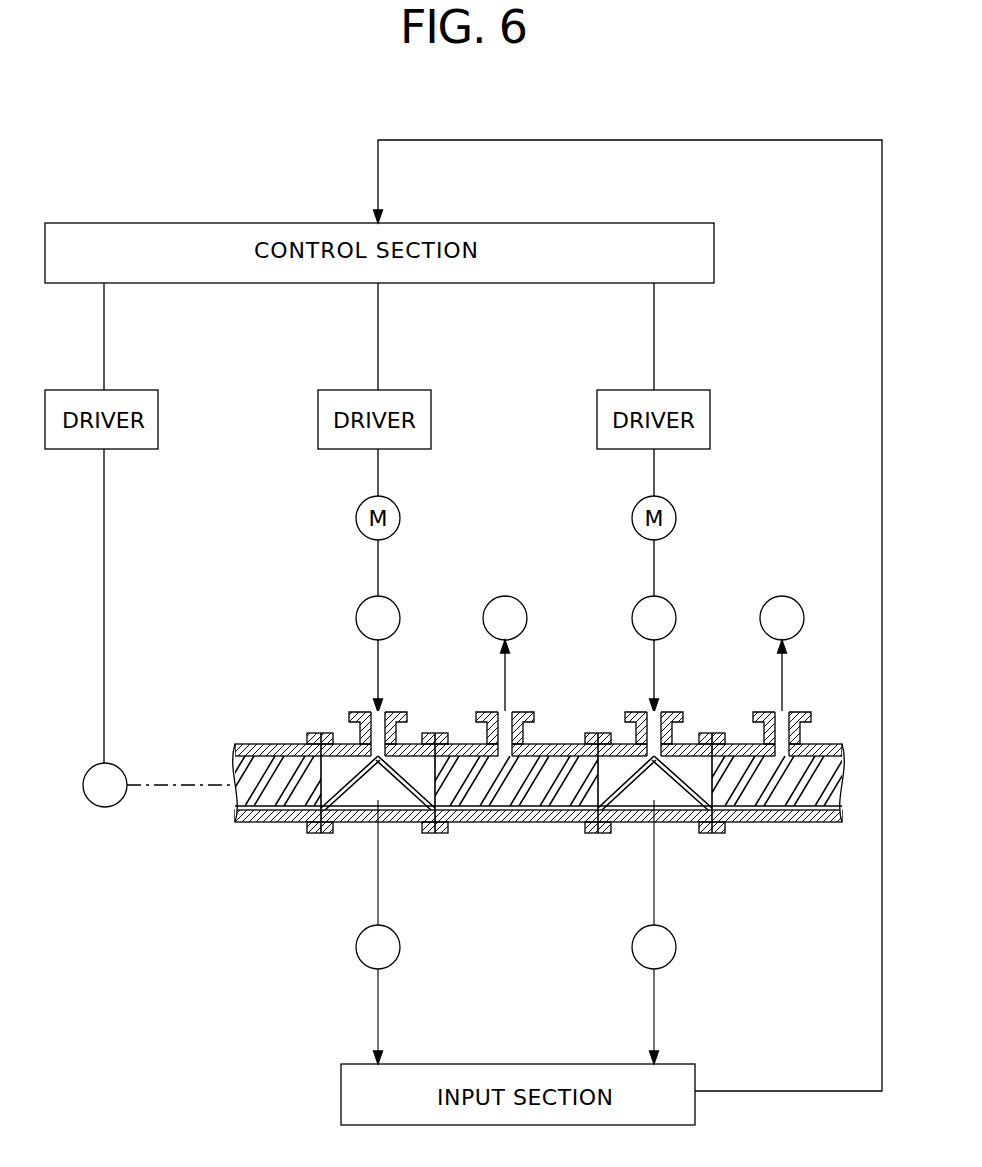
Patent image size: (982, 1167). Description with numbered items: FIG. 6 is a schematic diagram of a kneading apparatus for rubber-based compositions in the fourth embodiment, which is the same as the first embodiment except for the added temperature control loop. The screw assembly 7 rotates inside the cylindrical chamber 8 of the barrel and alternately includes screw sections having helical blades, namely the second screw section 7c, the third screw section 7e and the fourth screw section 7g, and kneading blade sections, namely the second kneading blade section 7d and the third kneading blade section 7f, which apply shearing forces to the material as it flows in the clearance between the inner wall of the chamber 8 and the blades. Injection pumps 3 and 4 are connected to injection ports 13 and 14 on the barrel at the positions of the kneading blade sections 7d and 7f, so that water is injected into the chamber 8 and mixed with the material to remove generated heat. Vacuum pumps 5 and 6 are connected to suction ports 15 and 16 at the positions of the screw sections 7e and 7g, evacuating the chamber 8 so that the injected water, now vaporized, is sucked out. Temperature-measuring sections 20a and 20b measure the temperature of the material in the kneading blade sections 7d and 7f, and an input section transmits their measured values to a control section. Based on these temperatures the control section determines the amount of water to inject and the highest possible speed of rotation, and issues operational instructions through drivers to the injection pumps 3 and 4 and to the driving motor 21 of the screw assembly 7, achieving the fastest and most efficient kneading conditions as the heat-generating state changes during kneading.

The injection pump 3 is at (403, 593).
The injection pump 4 is at (679, 593).
The vacuum pump 5 is at (530, 593).
The vacuum pump 6 is at (807, 593).
The screw assembly 7 is at (243, 822).
The second screw section 7c is at (276, 795).
The second kneading blade section 7d is at (398, 797).
The third screw section 7e is at (524, 790).
The third kneading blade section 7f is at (675, 797).
The fourth screw section 7g is at (758, 797).
The chamber 8 is at (290, 744).
The injection port 13 is at (403, 733).
The injection port 14 is at (678, 733).
The suction port 15 is at (530, 733).
The suction port 16 is at (808, 733).
The temperature-measuring section 20a is at (413, 947).
The temperature-measuring section 20b is at (689, 947).
The driving motor 21 is at (105, 820).